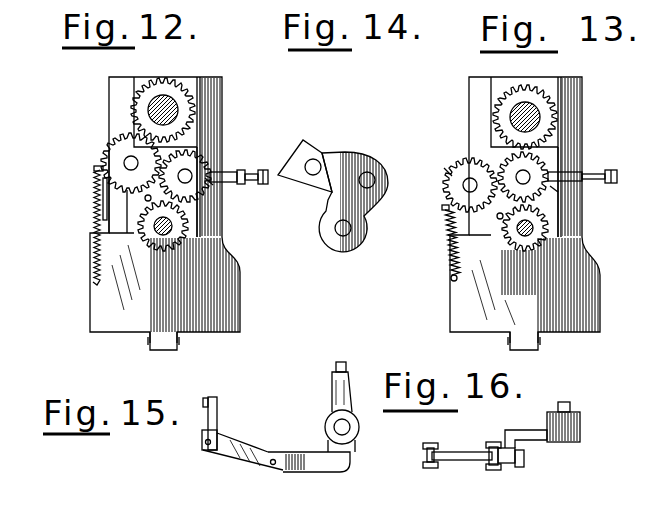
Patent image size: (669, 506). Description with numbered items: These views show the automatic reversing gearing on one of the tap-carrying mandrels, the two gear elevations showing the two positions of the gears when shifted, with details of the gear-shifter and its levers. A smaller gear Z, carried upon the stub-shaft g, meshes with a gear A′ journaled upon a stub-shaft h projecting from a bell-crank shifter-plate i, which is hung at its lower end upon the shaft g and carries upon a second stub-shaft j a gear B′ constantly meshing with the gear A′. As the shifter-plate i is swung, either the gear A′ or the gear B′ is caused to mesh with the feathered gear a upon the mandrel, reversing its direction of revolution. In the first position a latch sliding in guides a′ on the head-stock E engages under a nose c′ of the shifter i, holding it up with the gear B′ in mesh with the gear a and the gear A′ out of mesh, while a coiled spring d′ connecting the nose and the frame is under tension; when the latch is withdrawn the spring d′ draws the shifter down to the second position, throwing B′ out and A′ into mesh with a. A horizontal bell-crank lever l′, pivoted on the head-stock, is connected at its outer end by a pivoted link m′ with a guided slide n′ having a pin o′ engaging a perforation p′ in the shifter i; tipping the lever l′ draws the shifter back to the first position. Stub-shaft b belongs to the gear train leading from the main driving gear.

In FIG. 12, the feathered gear a is at (165, 93).
In FIG. 13, the feathered gear a is at (556, 105).
In FIG. 12, the head-stock E is at (215, 121).
In FIG. 13, the head-stock E is at (475, 100).
In FIG. 12, the gear B′ is at (108, 135).
In FIG. 13, the gear B′ is at (452, 183).
In FIG. 12, the second stub-shaft j is at (114, 157).
In FIG. 13, the second stub-shaft j is at (470, 180).
In FIG. 12, the nose c′ is at (103, 181).
In FIG. 14, the nose c′ is at (320, 186).
In FIG. 13, the nose c′ is at (442, 208).
In FIG. 12, the stub-shaft b is at (96, 178).
In FIG. 12, the guides a′ is at (95, 198).
In FIG. 12, the coiled spring d′ is at (95, 219).
In FIG. 13, the coiled spring d′ is at (446, 250).
In FIG. 12, the bell-crank shifter-plate i is at (146, 200).
In FIG. 14, the bell-crank shifter-plate i is at (338, 162).
In FIG. 13, the bell-crank shifter-plate i is at (499, 219).
In FIG. 12, the stub-shaft g is at (159, 238).
In FIG. 13, the stub-shaft g is at (522, 238).
In FIG. 12, the gear A′ is at (208, 172).
In FIG. 13, the gear A′ is at (549, 174).
In FIG. 12, the pivoted link m′ is at (257, 184).
In FIG. 13, the pivoted link m′ is at (598, 173).
In FIG. 15, the pivoted link m′ is at (253, 458).
In FIG. 16, the pivoted link m′ is at (467, 460).
In FIG. 12, the guided slide n′ is at (255, 170).
In FIG. 13, the guided slide n′ is at (605, 181).
In FIG. 15, the guided slide n′ is at (219, 427).
In FIG. 16, the guided slide n′ is at (436, 445).
In FIG. 12, the gear Z is at (201, 222).
In FIG. 13, the gear Z is at (580, 225).
In FIG. 12, the stub-shaft h is at (214, 183).
In FIG. 14, the stub-shaft h is at (378, 165).
In FIG. 13, the stub-shaft h is at (560, 193).
In FIG. 14, the perforation p′ is at (389, 176).
In FIG. 13, the perforation p′ is at (445, 170).
In FIG. 15, the pin o′ is at (205, 398).
In FIG. 15, the horizontal bell-crank lever l′ is at (340, 468).
In FIG. 16, the horizontal bell-crank lever l′ is at (553, 442).